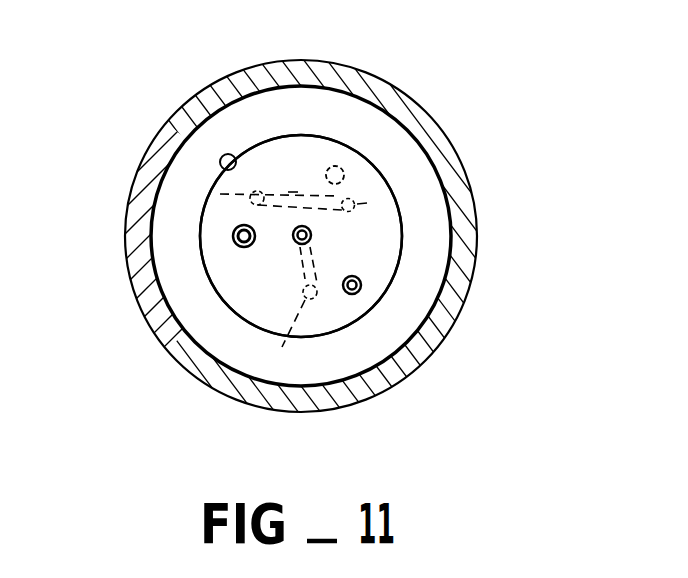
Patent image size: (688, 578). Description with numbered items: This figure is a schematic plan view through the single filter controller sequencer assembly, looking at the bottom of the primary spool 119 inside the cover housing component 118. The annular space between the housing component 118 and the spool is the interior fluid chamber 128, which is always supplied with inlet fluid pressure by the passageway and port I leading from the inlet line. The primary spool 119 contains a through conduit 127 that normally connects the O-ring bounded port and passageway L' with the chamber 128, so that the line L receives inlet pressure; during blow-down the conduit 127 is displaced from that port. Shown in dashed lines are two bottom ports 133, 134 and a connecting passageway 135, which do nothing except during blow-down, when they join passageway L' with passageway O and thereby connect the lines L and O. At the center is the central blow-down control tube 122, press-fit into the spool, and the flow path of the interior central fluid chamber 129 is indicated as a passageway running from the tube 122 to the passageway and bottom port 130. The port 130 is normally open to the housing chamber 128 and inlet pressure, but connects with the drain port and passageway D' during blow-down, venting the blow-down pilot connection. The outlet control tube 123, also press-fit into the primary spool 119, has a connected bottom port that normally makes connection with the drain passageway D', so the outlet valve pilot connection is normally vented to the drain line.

The cover housing component 118 is at (400, 92).
The interior fluid chamber 128 is at (404, 153).
The primary spool 119 is at (402, 241).
The through conduit 127 is at (233, 243).
The central blow-down control tube 122 is at (327, 237).
The outlet control tube 123 is at (361, 291).
The bottom port 133 is at (220, 194).
The bottom port 134 is at (377, 200).
The connecting passageway 135 is at (293, 192).
The central fluid chamber 129 is at (277, 270).
The passageway and bottom port 130 is at (289, 330).
The passageway and port I' I is at (227, 153).
The passageway O' O is at (336, 166).